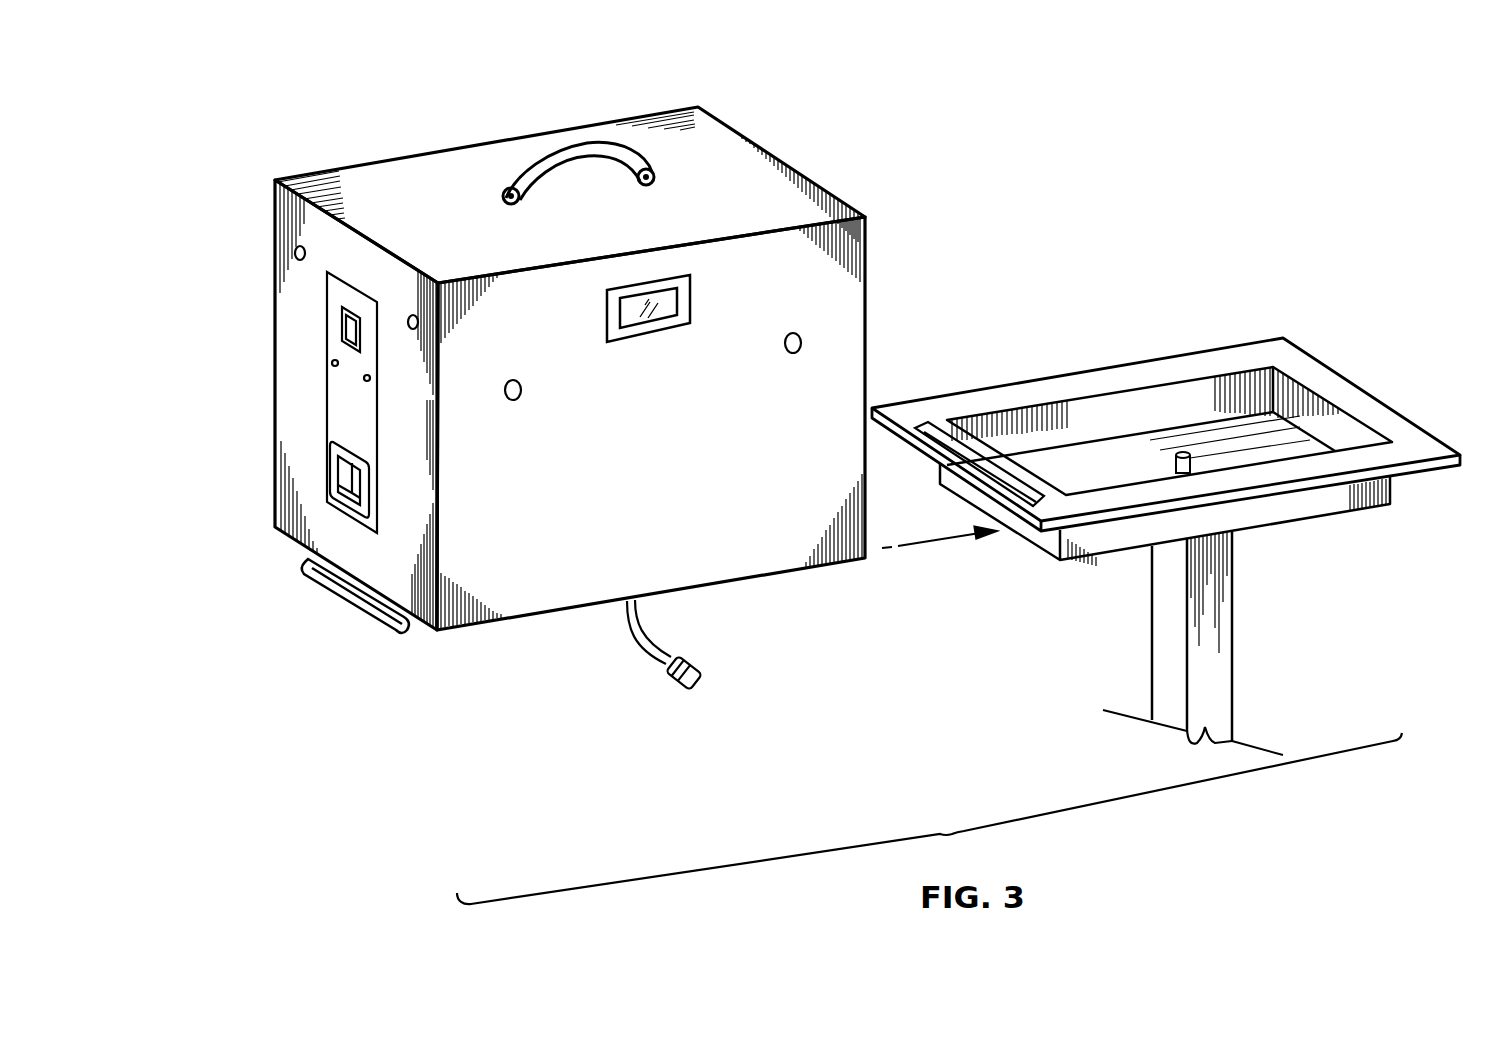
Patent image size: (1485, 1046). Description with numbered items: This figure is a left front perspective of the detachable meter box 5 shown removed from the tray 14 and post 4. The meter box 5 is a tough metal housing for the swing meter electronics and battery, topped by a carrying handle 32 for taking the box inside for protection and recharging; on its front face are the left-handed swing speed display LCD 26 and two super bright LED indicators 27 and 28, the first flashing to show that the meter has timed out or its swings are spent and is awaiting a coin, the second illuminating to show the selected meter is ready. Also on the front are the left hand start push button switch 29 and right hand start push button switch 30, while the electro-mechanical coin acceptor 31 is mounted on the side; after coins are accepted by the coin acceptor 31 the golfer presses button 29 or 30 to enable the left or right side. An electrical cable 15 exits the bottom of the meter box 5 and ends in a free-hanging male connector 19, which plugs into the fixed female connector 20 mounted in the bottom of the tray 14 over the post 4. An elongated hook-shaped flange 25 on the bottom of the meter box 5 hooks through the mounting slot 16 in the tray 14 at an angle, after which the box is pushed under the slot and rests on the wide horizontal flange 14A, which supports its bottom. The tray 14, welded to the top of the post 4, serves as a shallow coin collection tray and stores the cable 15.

The post 4 is at (1217, 617).
The meter box 5 is at (778, 186).
The tray 14 is at (1232, 373).
The horizontal flange 14A is at (1365, 408).
The electrical cable 15 is at (638, 643).
The mounting interface slot 16 is at (937, 435).
The male electrical connector 19 is at (700, 678).
The female electrical connector 20 is at (1180, 452).
The hook-shaped flange 25 is at (342, 598).
The swing speed display LCD 26 is at (652, 343).
The timed out/insert coin indicator LED 27 is at (792, 354).
The meter ready indicator LED 28 is at (515, 401).
The left hand start push button switch 29 is at (412, 313).
The right hand start push button switch 30 is at (294, 250).
The coin acceptor 31 is at (327, 382).
The carrying handle 32 is at (565, 153).